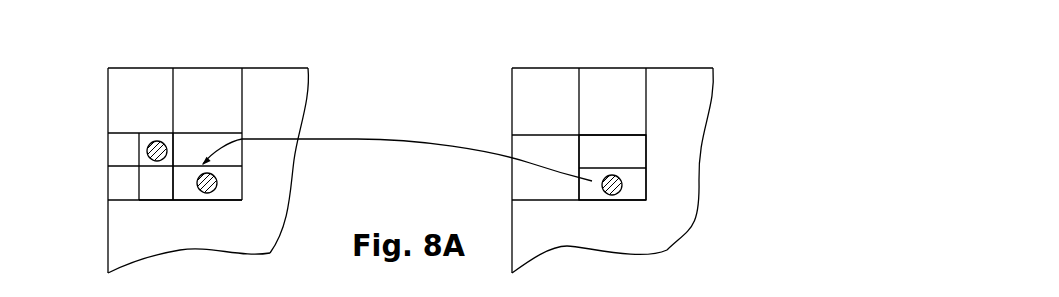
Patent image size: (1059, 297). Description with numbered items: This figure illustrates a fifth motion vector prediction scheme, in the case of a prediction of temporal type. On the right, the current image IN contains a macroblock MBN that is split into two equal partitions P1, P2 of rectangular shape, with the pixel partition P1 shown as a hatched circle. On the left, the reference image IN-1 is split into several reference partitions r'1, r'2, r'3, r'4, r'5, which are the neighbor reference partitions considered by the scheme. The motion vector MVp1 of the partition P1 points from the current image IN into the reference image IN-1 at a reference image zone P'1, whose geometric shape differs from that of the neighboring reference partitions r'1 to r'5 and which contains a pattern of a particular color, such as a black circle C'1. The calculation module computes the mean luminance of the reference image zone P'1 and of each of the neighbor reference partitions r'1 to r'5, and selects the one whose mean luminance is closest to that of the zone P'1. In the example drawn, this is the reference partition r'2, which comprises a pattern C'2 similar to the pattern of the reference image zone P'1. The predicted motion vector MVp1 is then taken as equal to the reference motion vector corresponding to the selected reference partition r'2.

The reference image IN-1 is at (265, 99).
The current image IN is at (669, 99).
The reference partition r'1 is at (185, 246).
The reference partition r'2 is at (134, 117).
The reference partition r'3 is at (147, 153).
The reference partition r'4 is at (147, 191).
The reference partition r'5 is at (147, 113).
The black circle pattern C'1 is at (196, 213).
The pattern C'2 is at (171, 106).
The reference image zone P'1 is at (223, 229).
The partition P1 is at (633, 178).
The partition P2 is at (633, 143).
The macroblock MBN is at (642, 208).
The motion vector MVp1 is at (363, 141).